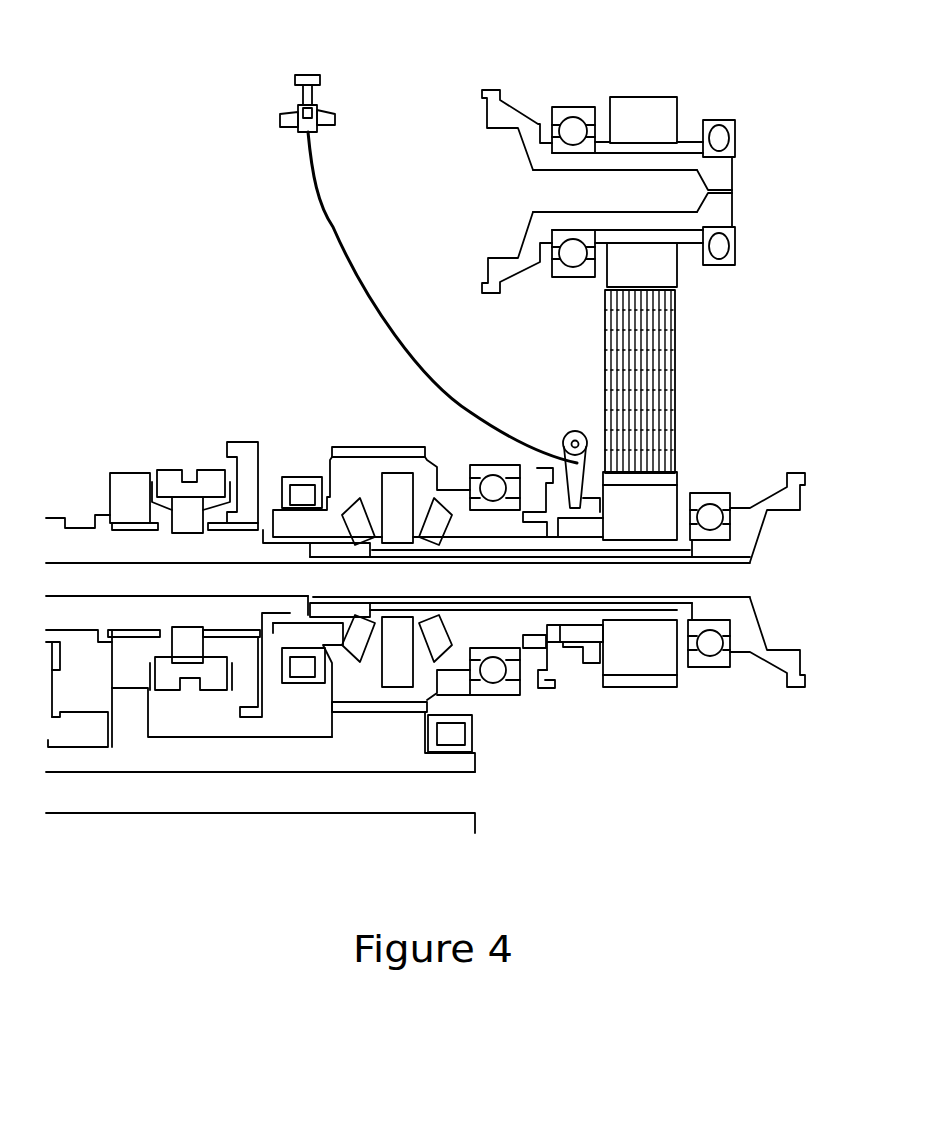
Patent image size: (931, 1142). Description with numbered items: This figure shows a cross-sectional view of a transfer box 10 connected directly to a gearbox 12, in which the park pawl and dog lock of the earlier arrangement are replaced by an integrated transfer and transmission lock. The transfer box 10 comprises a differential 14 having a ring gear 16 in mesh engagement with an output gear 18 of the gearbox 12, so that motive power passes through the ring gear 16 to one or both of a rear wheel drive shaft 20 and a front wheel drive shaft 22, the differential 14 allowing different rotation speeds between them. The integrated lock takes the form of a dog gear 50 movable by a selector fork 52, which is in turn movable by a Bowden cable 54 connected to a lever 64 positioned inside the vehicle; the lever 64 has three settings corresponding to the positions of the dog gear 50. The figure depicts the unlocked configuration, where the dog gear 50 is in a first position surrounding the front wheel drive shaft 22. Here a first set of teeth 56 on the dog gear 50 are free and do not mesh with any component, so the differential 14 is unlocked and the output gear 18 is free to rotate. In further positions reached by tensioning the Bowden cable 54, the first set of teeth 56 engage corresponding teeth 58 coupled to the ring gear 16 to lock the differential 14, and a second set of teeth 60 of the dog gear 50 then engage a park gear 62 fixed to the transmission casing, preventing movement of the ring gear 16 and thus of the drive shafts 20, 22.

The transfer box 10 is at (318, 381).
The gearbox 12 is at (126, 439).
The differential 14 is at (379, 435).
The ring gear 16 is at (413, 698).
The output gear 18 is at (353, 709).
The rear wheel drive shaft 20 is at (740, 610).
The front wheel drive shaft 22 is at (640, 543).
The dog gear 50 is at (555, 677).
The selector fork 52 is at (583, 453).
The Bowden cable 54 is at (330, 227).
The first set of teeth 56 is at (565, 648).
The corresponding teeth 58 is at (569, 610).
The second set of teeth 60 is at (542, 684).
The park gear 62 is at (518, 693).
The lever 64 is at (302, 75).